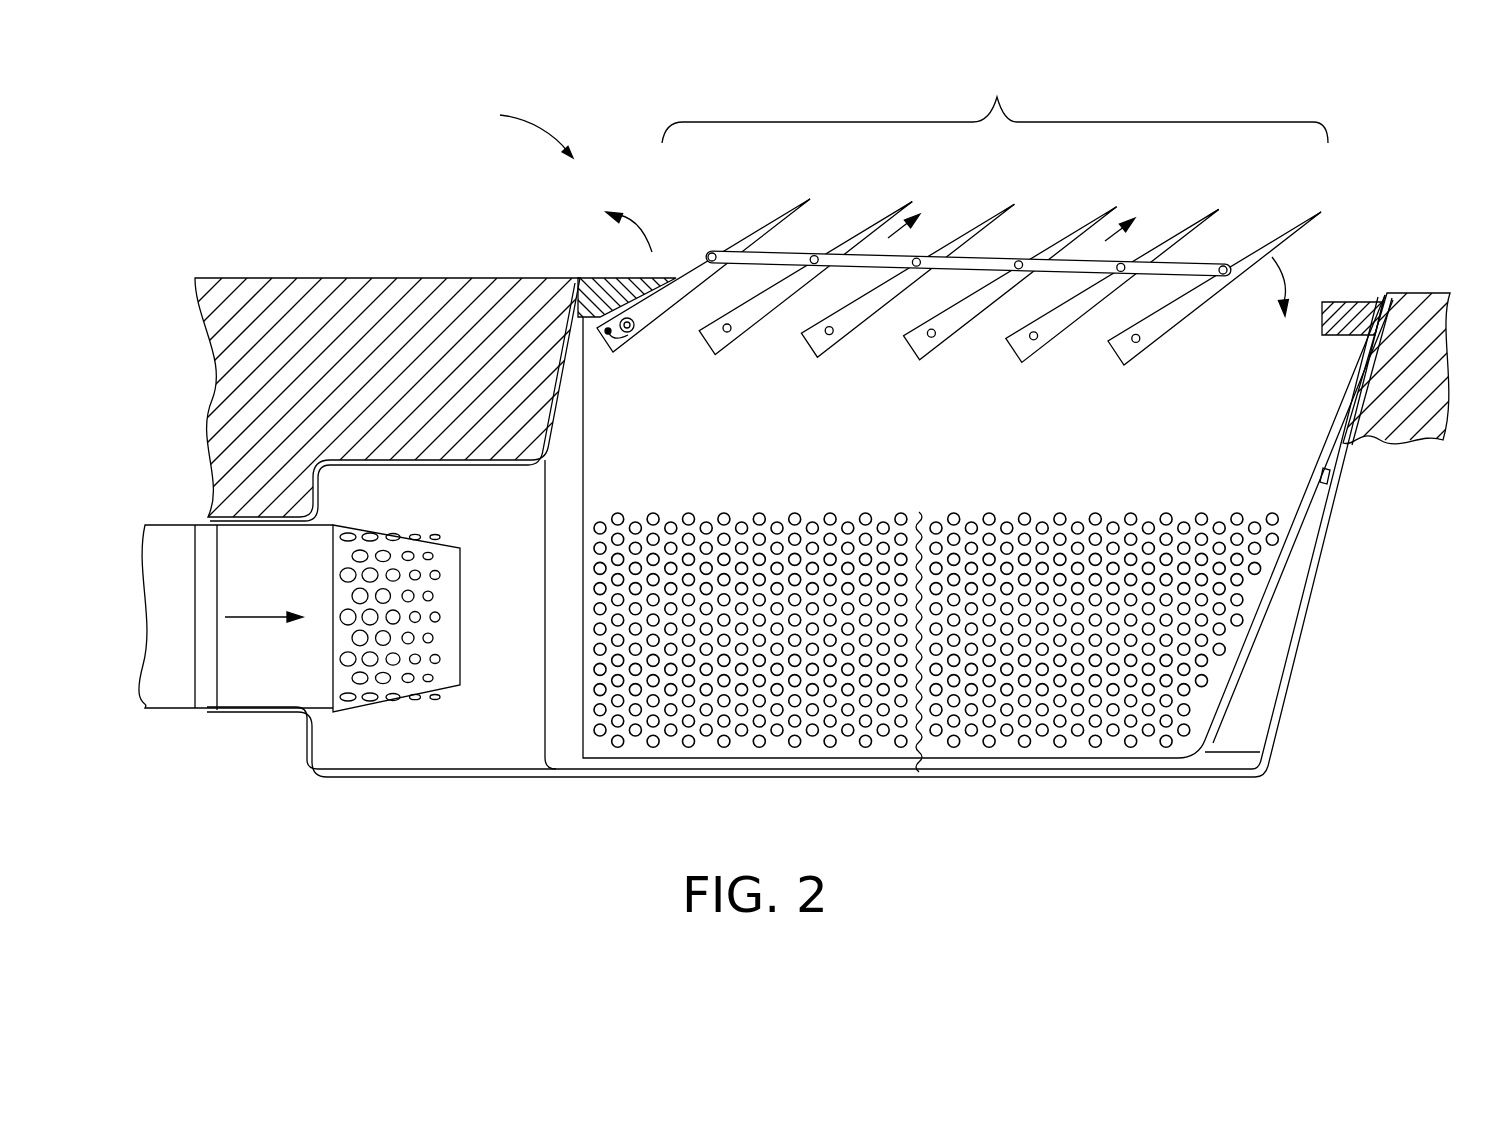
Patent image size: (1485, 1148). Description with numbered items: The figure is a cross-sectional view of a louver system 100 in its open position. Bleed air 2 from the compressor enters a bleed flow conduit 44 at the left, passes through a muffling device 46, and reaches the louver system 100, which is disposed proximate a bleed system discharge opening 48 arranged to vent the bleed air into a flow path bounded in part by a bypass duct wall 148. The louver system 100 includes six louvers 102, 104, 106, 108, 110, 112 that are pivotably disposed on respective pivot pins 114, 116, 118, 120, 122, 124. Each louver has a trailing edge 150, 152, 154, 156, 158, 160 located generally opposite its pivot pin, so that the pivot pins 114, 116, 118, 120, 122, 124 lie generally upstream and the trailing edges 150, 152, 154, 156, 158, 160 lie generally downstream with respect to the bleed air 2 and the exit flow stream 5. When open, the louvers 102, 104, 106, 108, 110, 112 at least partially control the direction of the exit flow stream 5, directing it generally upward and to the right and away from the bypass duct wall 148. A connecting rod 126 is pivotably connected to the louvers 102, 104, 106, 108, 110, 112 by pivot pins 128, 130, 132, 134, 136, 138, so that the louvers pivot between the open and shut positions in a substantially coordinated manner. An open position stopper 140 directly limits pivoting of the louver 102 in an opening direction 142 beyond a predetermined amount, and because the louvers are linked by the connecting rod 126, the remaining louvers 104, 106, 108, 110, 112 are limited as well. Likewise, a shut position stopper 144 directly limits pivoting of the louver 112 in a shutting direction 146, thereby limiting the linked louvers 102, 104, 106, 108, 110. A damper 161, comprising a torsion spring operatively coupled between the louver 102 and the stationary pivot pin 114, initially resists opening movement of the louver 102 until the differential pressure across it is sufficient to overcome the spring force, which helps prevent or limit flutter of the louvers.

The bleed air 2 is at (256, 616).
The exit flow stream 5 is at (890, 236).
The bleed flow conduit 44 is at (168, 700).
The muffling device 46 is at (1008, 803).
The bleed system discharge opening 48 is at (997, 97).
The louver system 100 is at (511, 127).
The louver 102 is at (687, 290).
The louver 104 is at (757, 307).
The louver 106 is at (855, 315).
The louver 108 is at (957, 318).
The louver 110 is at (1058, 320).
The louver 112 is at (1145, 337).
The pivot pin 114 is at (615, 347).
The pivot pin 116 is at (726, 334).
The pivot pin 118 is at (829, 337).
The pivot pin 120 is at (931, 340).
The pivot pin 122 is at (1033, 342).
The pivot pin 124 is at (1136, 345).
The connecting rod 126 is at (1186, 258).
The pivot pin 128 is at (714, 252).
The pivot pin 130 is at (816, 255).
The pivot pin 132 is at (918, 258).
The pivot pin 134 is at (1020, 260).
The pivot pin 136 is at (1122, 263).
The pivot pin 138 is at (1228, 278).
The open position stopper 140 is at (590, 292).
The opening direction 142 is at (652, 252).
The shut position stopper 144 is at (1342, 333).
The shutting direction 146 is at (1280, 264).
The bypass duct wall 148 is at (1413, 293).
The trailing edge 150 is at (812, 199).
The trailing edge 152 is at (914, 202).
The trailing edge 154 is at (1016, 204).
The trailing edge 156 is at (1118, 207).
The trailing edge 158 is at (1220, 209).
The trailing edge 160 is at (1322, 212).
The damper 161 is at (627, 337).